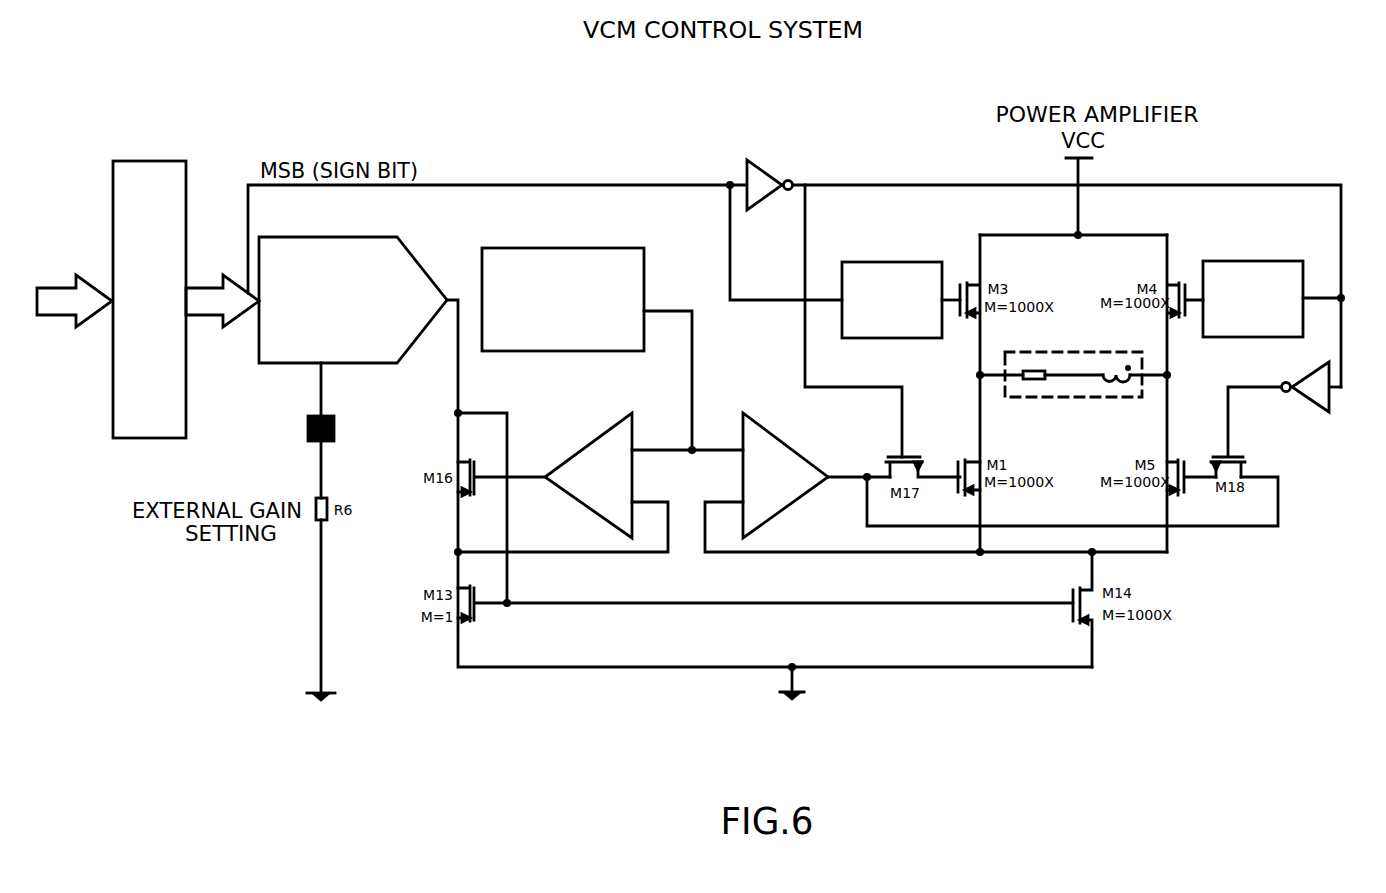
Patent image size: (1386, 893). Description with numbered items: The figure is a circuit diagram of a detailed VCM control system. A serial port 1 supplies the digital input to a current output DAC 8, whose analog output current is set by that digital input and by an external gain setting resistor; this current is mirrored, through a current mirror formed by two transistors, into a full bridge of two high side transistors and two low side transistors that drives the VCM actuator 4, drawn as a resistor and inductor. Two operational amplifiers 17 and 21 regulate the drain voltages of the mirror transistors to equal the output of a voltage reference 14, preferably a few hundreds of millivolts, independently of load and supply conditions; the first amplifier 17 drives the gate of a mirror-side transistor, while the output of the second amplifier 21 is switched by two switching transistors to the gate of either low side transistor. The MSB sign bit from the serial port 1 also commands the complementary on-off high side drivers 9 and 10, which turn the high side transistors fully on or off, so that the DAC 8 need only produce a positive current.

The serial port 1 is at (188, 207).
The digital to analog converter 8 is at (417, 258).
The voltage reference 14 is at (573, 248).
The operational amplifier 17 is at (587, 443).
The operational amplifier 21 is at (783, 438).
The high side driver 9 is at (907, 262).
The high side driver 10 is at (1252, 261).
The VCM actuator 4 is at (1078, 398).